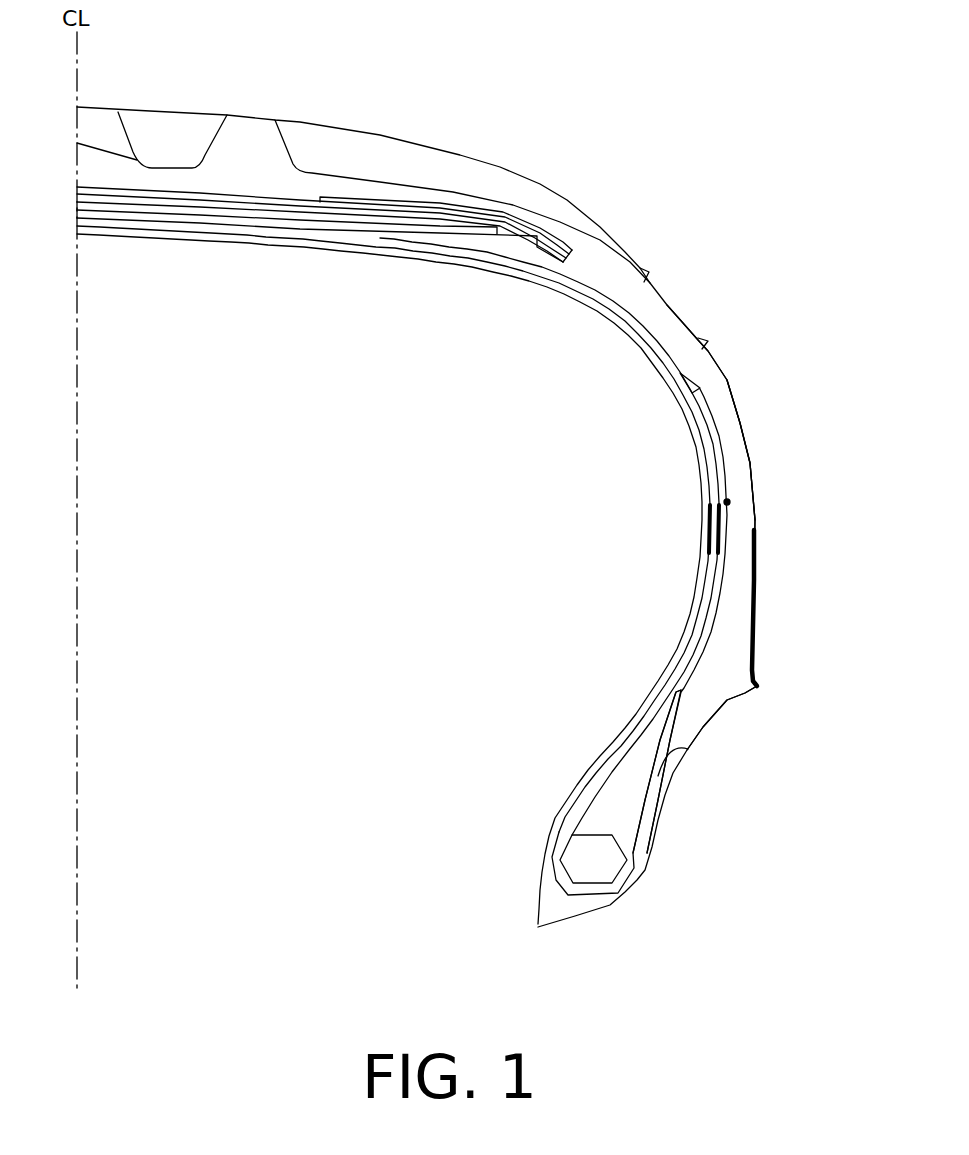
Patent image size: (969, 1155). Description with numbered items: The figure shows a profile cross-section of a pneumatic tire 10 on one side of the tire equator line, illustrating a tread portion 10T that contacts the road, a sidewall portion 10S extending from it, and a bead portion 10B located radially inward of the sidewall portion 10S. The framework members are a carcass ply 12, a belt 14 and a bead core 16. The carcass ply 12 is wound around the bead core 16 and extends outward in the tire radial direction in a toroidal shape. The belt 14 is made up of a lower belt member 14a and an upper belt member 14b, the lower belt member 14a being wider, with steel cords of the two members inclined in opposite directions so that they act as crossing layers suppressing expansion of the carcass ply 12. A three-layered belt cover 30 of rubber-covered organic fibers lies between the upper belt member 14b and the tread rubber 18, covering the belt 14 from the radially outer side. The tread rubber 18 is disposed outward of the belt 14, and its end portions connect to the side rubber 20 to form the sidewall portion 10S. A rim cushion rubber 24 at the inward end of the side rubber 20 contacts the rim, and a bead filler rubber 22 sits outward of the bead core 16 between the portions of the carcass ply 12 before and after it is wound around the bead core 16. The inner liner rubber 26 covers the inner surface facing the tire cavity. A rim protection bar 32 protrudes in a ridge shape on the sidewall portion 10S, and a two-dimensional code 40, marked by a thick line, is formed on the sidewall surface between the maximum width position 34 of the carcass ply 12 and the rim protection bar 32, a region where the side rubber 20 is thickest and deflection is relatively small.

The pneumatic tire 10 is at (537, 130).
The tread portion 10T is at (289, 108).
The sidewall portion 10S is at (749, 393).
The bead portion 10B is at (664, 851).
The carcass ply 12 is at (563, 283).
The belt 14 is at (320, 273).
The lower belt member 14a is at (327, 228).
The upper belt member 14b is at (353, 223).
The bead core 16 is at (597, 875).
The tread rubber 18 is at (443, 197).
The side rubber 20 is at (733, 437).
The bead filler rubber 22 is at (617, 805).
The rim cushion rubber 24 is at (661, 780).
The inner liner rubber 26 is at (583, 307).
The belt cover 30 is at (404, 217).
The rim protection bar 32 is at (760, 687).
The maximum width position 34 is at (730, 502).
The two-dimensional code 40 is at (757, 556).